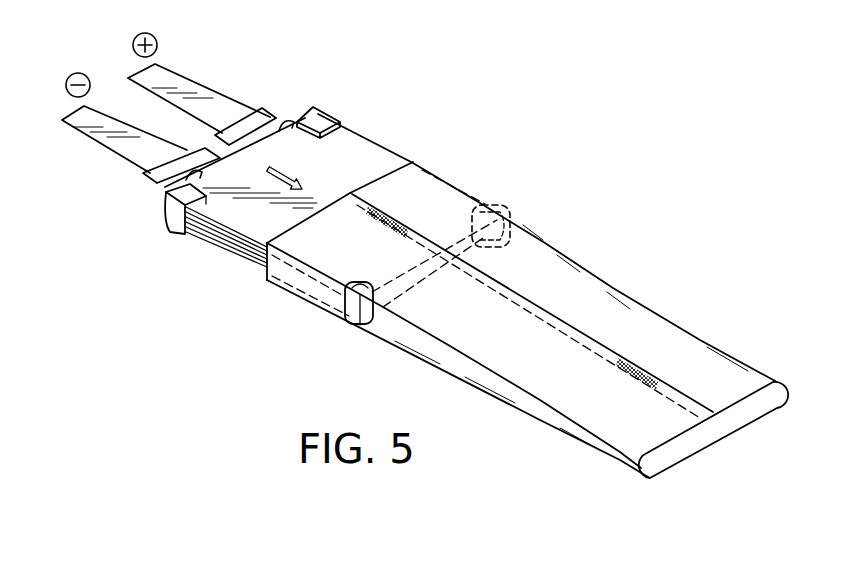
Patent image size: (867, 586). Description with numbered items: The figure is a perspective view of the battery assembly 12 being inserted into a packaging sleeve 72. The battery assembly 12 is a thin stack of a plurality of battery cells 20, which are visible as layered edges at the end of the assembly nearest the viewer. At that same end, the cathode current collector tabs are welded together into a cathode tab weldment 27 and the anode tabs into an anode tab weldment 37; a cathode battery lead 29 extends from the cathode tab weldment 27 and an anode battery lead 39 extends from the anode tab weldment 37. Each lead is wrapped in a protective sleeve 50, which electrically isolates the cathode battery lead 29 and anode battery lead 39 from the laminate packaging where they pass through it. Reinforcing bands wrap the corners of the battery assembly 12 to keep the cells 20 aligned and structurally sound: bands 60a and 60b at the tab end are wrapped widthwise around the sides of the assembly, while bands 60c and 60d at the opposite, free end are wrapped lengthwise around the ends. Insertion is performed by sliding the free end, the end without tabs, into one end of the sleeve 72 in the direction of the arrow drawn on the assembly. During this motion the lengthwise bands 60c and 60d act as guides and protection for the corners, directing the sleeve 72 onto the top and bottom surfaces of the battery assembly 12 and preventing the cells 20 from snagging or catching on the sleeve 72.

The battery assembly 12 is at (380, 143).
The battery cells 20 is at (246, 258).
The cathode tab weldment 27 is at (284, 120).
The cathode battery lead 29 is at (180, 85).
The anode tab weldment 37 is at (196, 170).
The anode battery lead 39 is at (117, 143).
The protective sleeve 50 is at (259, 111).
The reinforcing band 60a is at (175, 230).
The reinforcing band 60b is at (338, 113).
The reinforcing band 60c is at (368, 324).
The reinforcing band 60d is at (502, 208).
The packaging sleeve 72 is at (622, 292).